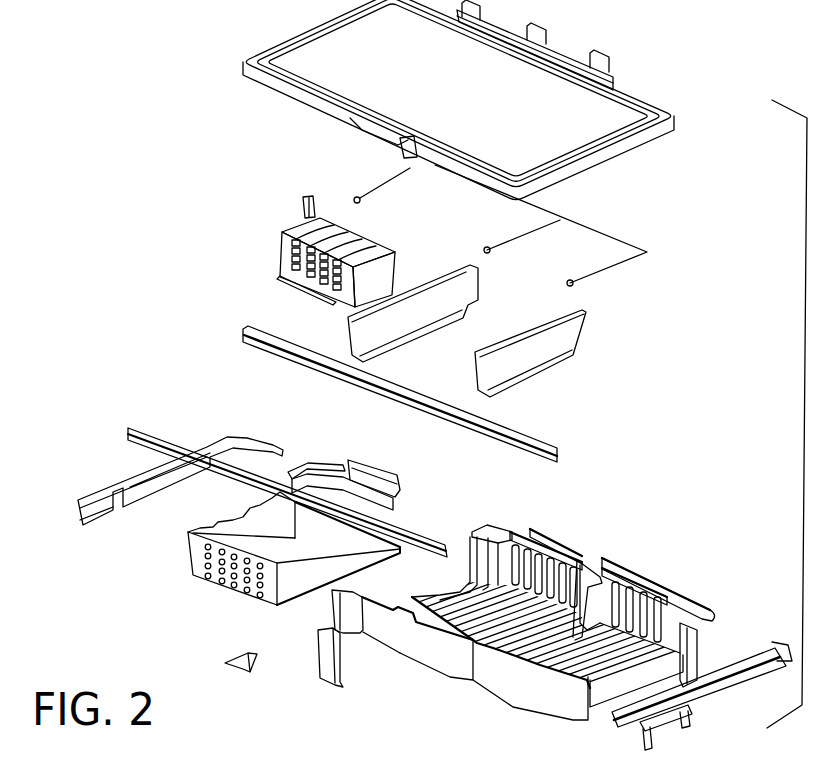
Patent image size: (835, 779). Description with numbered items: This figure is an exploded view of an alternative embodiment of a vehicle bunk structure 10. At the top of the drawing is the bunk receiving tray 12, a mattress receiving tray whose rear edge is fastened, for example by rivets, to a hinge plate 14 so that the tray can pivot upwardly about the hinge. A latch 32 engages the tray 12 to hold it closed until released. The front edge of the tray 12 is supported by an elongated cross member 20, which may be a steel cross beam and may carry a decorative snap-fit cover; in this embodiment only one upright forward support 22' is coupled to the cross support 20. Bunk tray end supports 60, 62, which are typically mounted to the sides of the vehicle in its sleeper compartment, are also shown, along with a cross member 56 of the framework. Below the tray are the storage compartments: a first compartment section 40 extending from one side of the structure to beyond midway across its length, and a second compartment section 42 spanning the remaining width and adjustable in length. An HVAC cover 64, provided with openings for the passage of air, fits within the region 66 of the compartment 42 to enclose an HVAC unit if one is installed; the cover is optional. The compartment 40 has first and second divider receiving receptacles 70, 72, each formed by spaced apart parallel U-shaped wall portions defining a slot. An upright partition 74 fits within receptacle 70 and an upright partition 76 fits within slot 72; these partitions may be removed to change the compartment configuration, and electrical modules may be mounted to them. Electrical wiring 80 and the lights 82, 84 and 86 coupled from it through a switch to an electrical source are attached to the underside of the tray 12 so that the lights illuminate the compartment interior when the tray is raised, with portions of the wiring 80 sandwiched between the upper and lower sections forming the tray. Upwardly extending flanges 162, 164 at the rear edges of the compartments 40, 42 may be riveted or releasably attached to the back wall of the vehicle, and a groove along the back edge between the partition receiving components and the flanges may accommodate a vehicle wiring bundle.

The bunk structure 10 is at (724, 86).
The bunk receiving tray 12 is at (616, 152).
The hinge plate 14 is at (616, 75).
The cross member 20 is at (295, 360).
The forward support 22' is at (308, 673).
The latch 32 is at (225, 663).
The first compartment section 40 is at (493, 678).
The second compartment section 42 is at (223, 578).
The cross member 56 is at (222, 468).
The bunk tray end support 60 is at (723, 687).
The bunk tray end support 62 is at (139, 480).
The HVAC cover 64 is at (283, 248).
The region 66 is at (376, 508).
The divider receiving receptacle 70 is at (592, 580).
The divider receiving receptacle 72 is at (486, 526).
The upright partition 74 is at (530, 378).
The upright partition 76 is at (395, 335).
The electrical wiring 80 is at (597, 228).
The light 82 is at (574, 285).
The light 84 is at (491, 252).
The light 86 is at (360, 201).
The upwardly extending flange 162 is at (660, 583).
The upwardly extending flange 164 is at (368, 472).